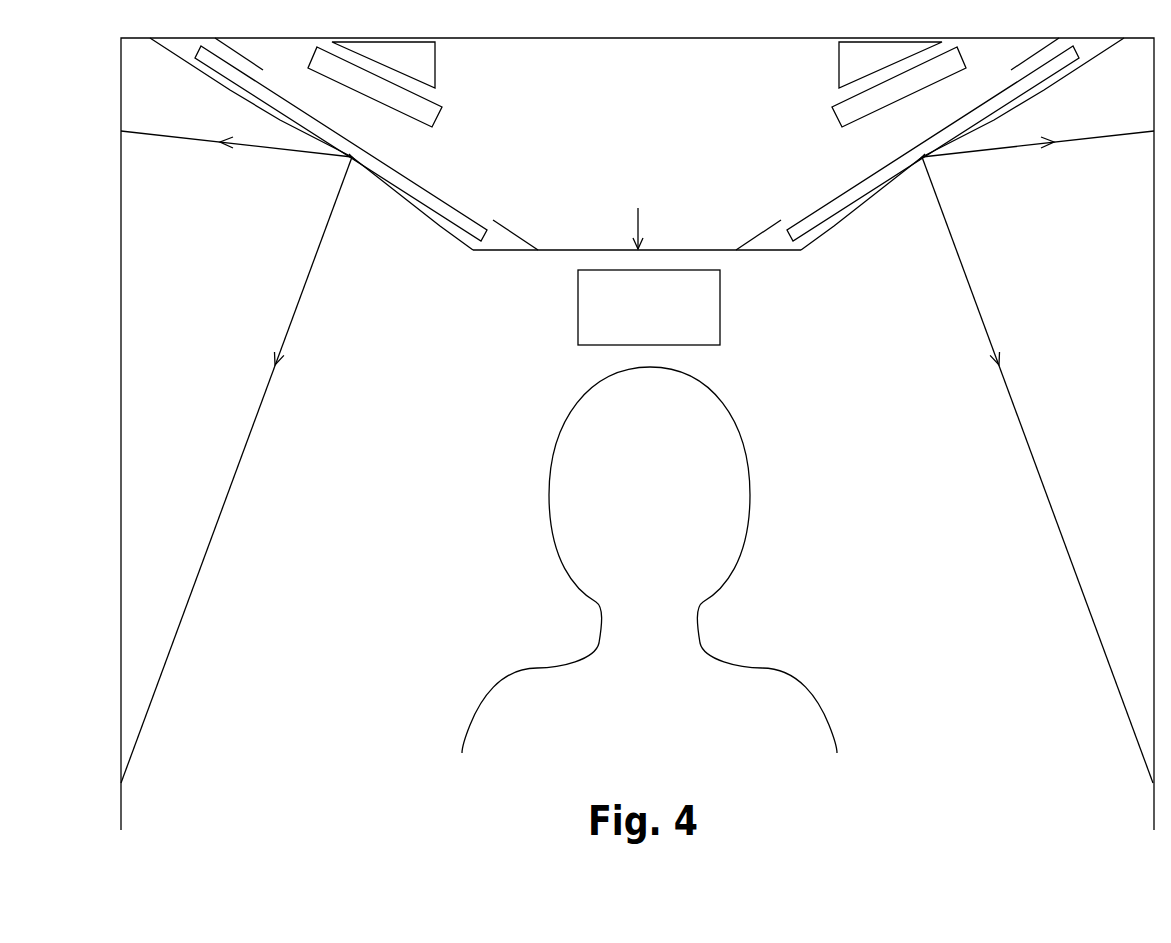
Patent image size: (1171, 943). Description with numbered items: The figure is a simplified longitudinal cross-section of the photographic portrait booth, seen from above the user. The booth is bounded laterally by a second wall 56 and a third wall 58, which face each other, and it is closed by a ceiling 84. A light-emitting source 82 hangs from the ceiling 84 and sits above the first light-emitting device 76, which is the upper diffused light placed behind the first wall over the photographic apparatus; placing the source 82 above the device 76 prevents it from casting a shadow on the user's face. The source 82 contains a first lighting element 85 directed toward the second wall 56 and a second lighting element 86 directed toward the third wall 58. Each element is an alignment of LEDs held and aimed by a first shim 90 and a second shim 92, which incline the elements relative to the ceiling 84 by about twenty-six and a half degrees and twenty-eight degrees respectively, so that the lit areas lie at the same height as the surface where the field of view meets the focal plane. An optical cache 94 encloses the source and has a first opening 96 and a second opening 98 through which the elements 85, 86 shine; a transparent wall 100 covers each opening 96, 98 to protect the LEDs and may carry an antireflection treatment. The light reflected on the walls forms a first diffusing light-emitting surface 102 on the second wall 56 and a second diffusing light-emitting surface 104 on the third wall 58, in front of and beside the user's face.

The second wall 56 is at (121, 179).
The third wall 58 is at (1154, 228).
The first light-emitting device 76 is at (649, 511).
The light-emitting source 82 is at (636, 198).
The ceiling 84 is at (1135, 38).
The first lighting element 85 is at (433, 116).
The second lighting element 86 is at (855, 112).
The first shim 90 is at (433, 64).
The second shim 92 is at (842, 74).
The optical cache 94 is at (800, 250).
The first opening 96 is at (352, 158).
The second opening 98 is at (922, 158).
The transparent wall 100 is at (418, 182).
The first diffusing light-emitting surface 102 is at (121, 410).
The second diffusing light-emitting surface 104 is at (1154, 400).